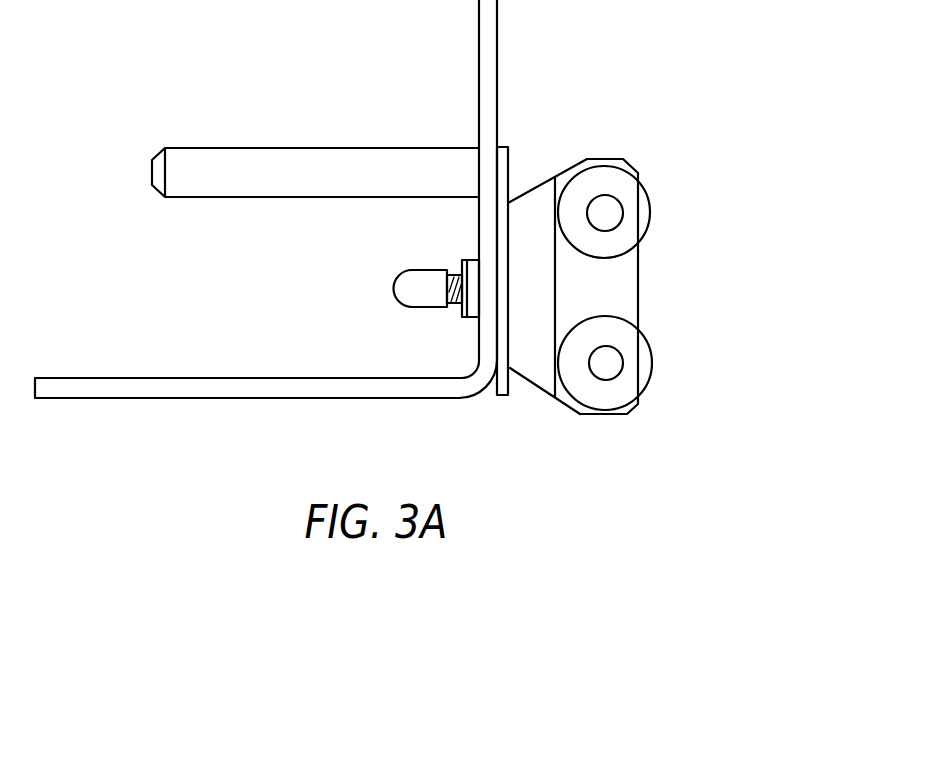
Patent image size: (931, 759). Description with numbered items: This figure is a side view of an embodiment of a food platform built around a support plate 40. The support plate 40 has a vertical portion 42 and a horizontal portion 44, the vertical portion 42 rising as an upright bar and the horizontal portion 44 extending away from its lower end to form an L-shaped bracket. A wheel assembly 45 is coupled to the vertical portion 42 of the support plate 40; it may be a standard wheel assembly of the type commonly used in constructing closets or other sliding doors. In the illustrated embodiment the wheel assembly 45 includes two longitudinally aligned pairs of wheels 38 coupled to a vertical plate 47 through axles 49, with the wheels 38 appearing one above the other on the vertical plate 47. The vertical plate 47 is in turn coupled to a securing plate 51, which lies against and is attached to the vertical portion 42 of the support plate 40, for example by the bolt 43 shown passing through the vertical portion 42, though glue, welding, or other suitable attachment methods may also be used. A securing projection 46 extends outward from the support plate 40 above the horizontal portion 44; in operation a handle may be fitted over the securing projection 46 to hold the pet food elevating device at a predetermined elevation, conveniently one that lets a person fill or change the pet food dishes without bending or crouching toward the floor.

The wheels 38 is at (635, 202).
The support plate 40 is at (485, 386).
The vertical portion 42 is at (497, 35).
The bolt 43 is at (455, 303).
The horizontal portion 44 is at (122, 388).
The wheel assembly 45 is at (540, 372).
The securing projection 46 is at (260, 162).
The vertical plate 47 is at (632, 310).
The axles 49 is at (606, 216).
The securing plate 51 is at (503, 170).